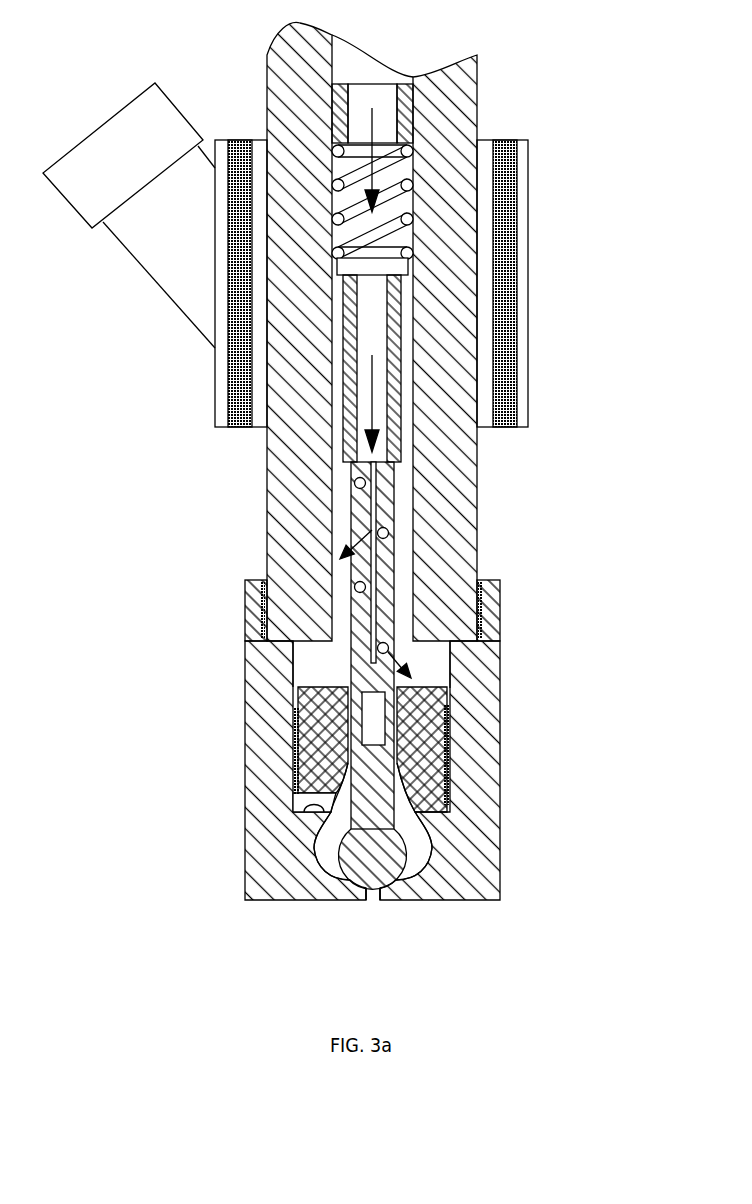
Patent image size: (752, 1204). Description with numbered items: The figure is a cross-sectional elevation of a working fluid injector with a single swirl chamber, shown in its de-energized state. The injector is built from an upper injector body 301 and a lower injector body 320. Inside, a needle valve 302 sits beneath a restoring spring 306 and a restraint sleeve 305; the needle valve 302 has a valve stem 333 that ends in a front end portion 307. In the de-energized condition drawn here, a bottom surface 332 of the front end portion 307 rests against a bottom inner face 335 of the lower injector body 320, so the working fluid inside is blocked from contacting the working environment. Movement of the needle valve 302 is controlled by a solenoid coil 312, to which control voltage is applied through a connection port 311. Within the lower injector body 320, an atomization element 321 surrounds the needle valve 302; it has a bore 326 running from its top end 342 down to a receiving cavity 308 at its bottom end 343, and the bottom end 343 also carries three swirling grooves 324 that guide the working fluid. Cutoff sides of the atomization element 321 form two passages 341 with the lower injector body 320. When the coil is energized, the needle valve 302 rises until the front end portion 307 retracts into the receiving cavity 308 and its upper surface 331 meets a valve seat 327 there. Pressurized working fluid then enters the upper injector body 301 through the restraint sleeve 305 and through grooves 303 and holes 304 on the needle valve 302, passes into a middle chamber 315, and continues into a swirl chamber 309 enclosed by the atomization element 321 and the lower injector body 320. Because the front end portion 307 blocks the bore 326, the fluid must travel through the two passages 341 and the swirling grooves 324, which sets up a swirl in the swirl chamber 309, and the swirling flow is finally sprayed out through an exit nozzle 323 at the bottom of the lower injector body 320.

The upper injector body 301 is at (462, 497).
The needle valve 302 is at (343, 460).
The grooves 303 is at (352, 645).
The holes 304 is at (272, 548).
The restraint sleeve 305 is at (340, 84).
The restoring spring 306 is at (413, 152).
The front end portion 307 is at (365, 889).
The receiving cavity 308 is at (343, 798).
The swirl chamber 309 is at (340, 848).
The connection port 311 is at (157, 117).
The solenoid coil 312 is at (227, 407).
The middle chamber 315 is at (328, 669).
The lower injector body 320 is at (502, 832).
The atomization element 321 is at (430, 738).
The exit nozzle 323 is at (373, 896).
The swirling grooves 324 is at (330, 848).
The bore 326 is at (300, 760).
The valve seat 327 is at (303, 793).
The upper surface 331 is at (401, 841).
The bottom surface 332 is at (381, 893).
The valve stem 333 is at (401, 707).
The bottom inner face 335 is at (383, 885).
The passages 341 is at (445, 822).
The top end 342 is at (433, 688).
The bottom end 343 is at (447, 832).